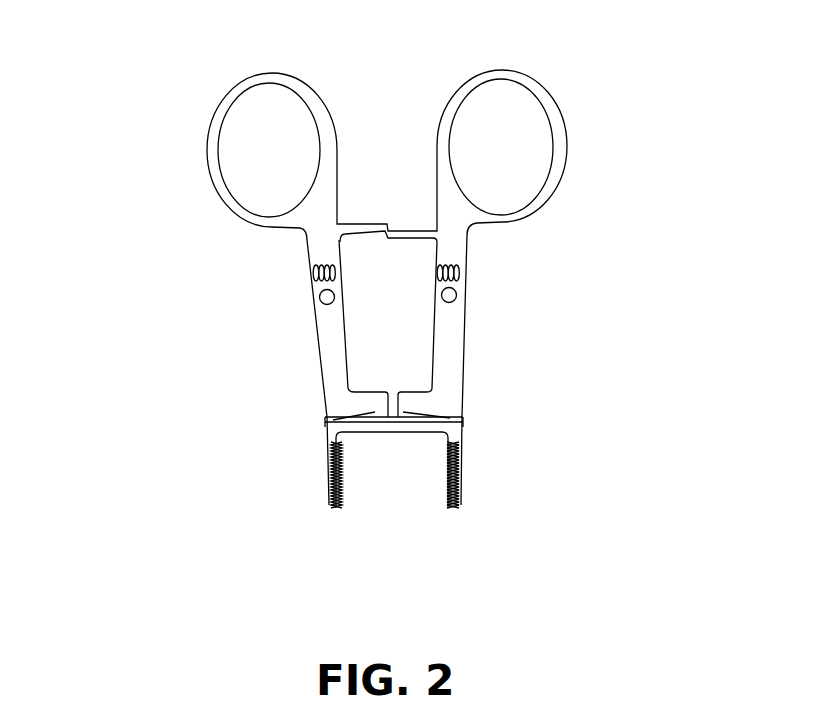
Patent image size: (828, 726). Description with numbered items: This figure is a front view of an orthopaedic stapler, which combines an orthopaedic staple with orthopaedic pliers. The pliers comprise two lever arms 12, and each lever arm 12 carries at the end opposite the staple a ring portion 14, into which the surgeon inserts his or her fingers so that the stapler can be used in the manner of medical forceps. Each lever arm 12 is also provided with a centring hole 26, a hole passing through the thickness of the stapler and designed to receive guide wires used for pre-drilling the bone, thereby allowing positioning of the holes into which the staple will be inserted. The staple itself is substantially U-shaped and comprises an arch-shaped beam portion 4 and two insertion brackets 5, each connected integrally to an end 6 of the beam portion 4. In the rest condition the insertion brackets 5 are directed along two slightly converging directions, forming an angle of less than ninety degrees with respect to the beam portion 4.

The ring portion 14 is at (213, 120).
The lever arm 12 is at (316, 328).
The centring hole 26 is at (450, 293).
The beam portion 4 is at (387, 428).
The end 6 is at (327, 423).
The insertion bracket 5 is at (462, 445).